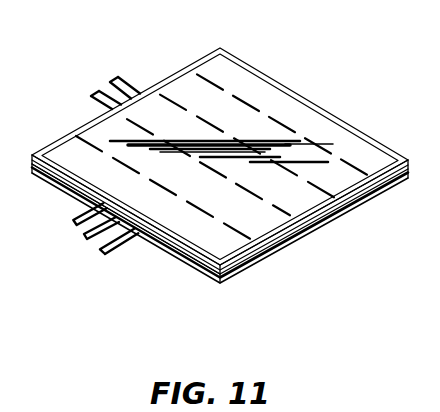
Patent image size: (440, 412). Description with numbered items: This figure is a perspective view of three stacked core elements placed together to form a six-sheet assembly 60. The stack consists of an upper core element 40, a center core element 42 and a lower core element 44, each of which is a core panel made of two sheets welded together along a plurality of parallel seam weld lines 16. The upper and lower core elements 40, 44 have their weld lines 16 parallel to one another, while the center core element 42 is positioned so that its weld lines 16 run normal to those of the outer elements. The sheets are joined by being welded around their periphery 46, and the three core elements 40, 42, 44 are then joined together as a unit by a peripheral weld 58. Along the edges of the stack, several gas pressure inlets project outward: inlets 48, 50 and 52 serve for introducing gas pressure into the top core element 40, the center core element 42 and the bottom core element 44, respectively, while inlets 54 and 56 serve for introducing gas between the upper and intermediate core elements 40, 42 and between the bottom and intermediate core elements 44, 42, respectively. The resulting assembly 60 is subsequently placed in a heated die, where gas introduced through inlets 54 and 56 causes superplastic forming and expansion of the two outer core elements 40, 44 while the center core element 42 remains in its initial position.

The seam weld lines 16 is at (222, 130).
The upper core element 40 is at (196, 271).
The center core element 42 is at (245, 270).
The lower core element 44 is at (296, 242).
The periphery 46 is at (338, 217).
The gas pressure inlet 48 is at (125, 79).
The gas pressure inlet 50 is at (73, 220).
The gas pressure inlet 52 is at (92, 95).
The gas pressure inlet 54 is at (84, 236).
The gas pressure inlet 56 is at (117, 250).
The peripheral weld 58 is at (351, 193).
The assembly 60 is at (350, 87).